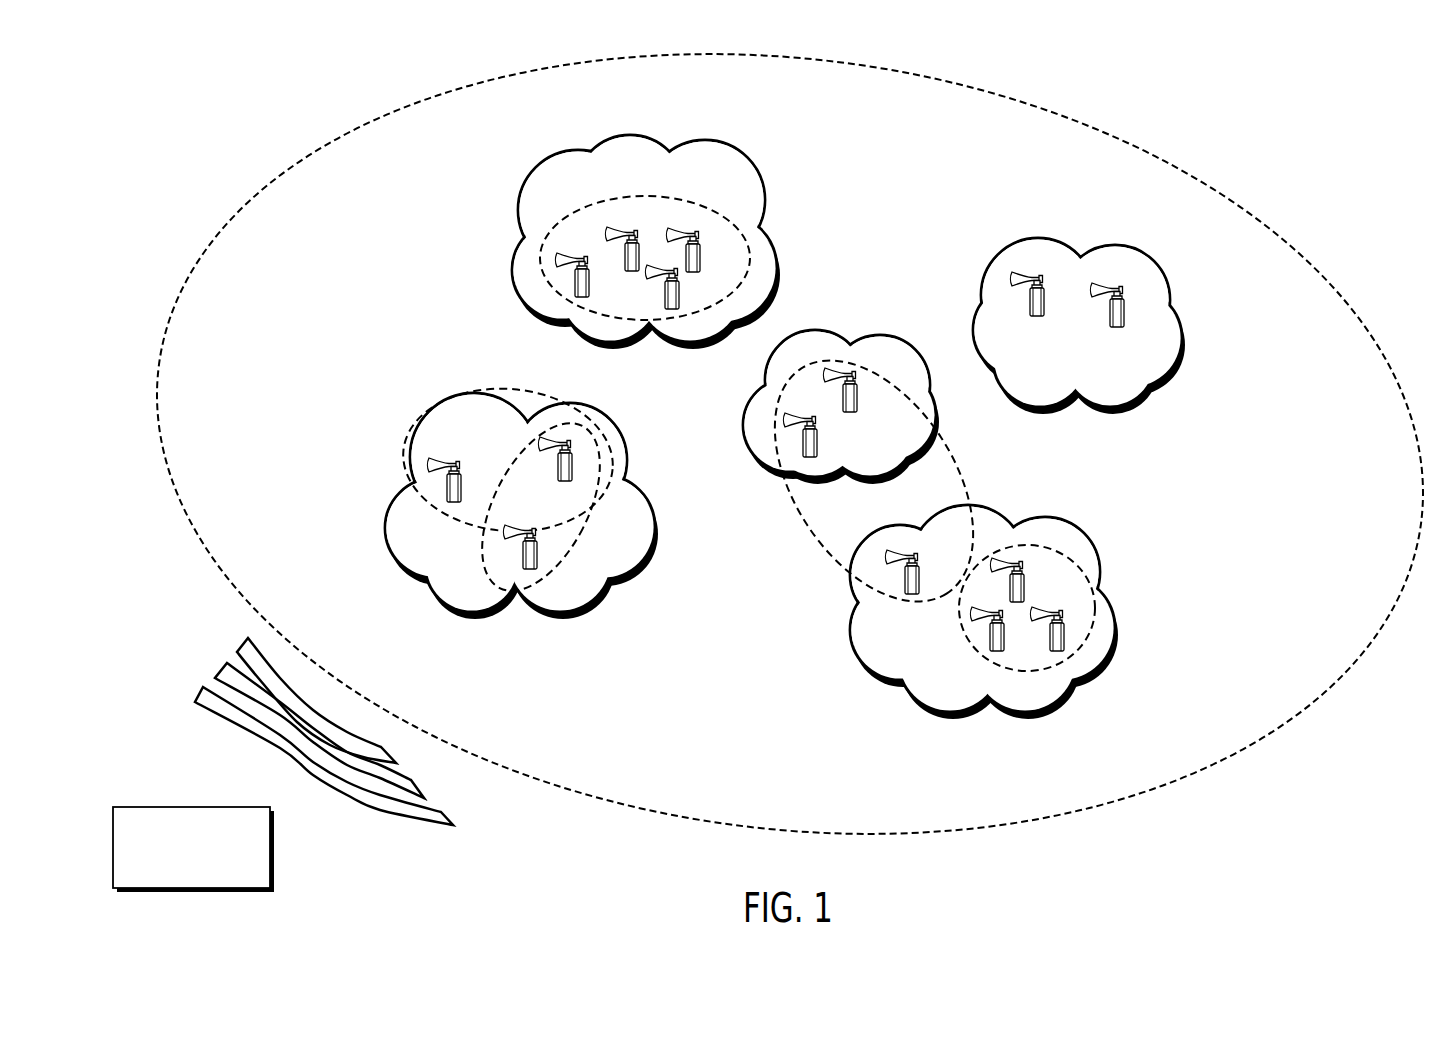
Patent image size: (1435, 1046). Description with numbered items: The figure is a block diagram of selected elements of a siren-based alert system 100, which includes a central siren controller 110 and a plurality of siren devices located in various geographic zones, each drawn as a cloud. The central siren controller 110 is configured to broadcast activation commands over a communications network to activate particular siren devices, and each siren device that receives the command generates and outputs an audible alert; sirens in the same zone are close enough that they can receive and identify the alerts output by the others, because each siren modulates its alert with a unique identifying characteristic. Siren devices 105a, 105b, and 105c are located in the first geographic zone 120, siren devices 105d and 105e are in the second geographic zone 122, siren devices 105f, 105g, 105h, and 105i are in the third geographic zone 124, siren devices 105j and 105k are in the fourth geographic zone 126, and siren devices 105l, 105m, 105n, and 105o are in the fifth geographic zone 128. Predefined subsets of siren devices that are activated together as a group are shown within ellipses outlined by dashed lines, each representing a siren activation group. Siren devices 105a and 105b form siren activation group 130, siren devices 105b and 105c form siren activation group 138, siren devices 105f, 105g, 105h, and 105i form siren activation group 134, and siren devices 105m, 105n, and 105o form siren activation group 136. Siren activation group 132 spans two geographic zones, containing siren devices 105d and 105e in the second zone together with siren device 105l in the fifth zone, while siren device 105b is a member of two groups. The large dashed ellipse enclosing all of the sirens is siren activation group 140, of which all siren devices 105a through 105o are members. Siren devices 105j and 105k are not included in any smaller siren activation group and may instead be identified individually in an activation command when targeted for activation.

The siren-based alert system 100 is at (226, 92).
The central siren controller 110 is at (192, 807).
The geographic zone 1 120 is at (427, 623).
The geographic zone 2 122 is at (922, 327).
The geographic zone 3 124 is at (772, 129).
The geographic zone 4 126 is at (1145, 443).
The geographic zone 5 128 is at (900, 727).
The siren activation group 130 is at (474, 392).
The siren activation group 132 is at (803, 523).
The siren activation group 134 is at (545, 232).
The siren activation group 136 is at (1020, 672).
The siren activation group 138 is at (585, 535).
The siren activation group 140 is at (700, 53).
The siren device 105a is at (438, 460).
The siren device 105b is at (572, 455).
The siren device 105c is at (537, 570).
The siren device 105d is at (818, 432).
The siren device 105e is at (847, 368).
The siren device 105f is at (574, 282).
The siren device 105g is at (632, 228).
The siren device 105h is at (672, 310).
The siren device 105i is at (701, 250).
The siren device 105j is at (1037, 272).
The siren device 105k is at (1125, 300).
The siren device 105l is at (895, 555).
The siren device 105m is at (989, 648).
The siren device 105n is at (1065, 650).
The siren device 105o is at (1025, 560).